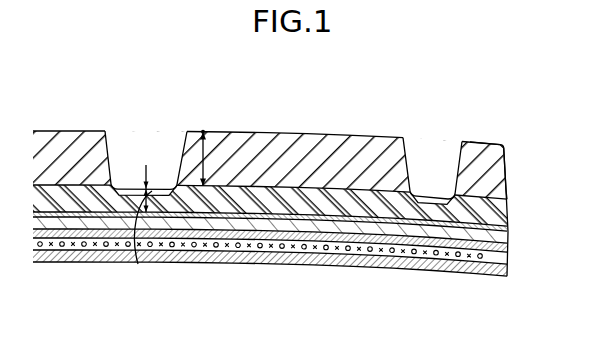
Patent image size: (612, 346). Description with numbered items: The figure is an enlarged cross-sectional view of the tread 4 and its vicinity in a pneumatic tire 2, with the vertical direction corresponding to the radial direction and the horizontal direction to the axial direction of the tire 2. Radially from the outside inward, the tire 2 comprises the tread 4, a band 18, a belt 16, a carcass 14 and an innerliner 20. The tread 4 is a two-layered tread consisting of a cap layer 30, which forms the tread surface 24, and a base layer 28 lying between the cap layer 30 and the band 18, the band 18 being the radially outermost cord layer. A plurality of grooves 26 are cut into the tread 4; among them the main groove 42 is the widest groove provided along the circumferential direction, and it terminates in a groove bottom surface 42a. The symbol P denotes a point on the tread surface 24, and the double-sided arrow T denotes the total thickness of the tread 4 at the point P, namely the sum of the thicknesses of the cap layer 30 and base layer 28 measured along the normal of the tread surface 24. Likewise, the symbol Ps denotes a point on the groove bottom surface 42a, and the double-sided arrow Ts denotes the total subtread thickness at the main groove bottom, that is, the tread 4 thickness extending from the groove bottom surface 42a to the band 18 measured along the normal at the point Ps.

The pneumatic tire 2 is at (499, 104).
The tread 4 is at (275, 127).
The carcass 14 is at (68, 263).
The belt 16 is at (243, 240).
The band 18 is at (318, 216).
The innerliner 20 is at (418, 274).
The tread surface 24 is at (357, 132).
The groove 26 is at (110, 129).
The base layer 28 is at (508, 217).
The cap layer 30 is at (497, 174).
The main groove 42 is at (270, 150).
The groove bottom surface 42a is at (163, 186).
The point on tread surface P is at (205, 128).
The total thickness of tread T is at (211, 159).
The total subtread thickness at main groove bottom Ts is at (157, 193).
The point on groove bottom surface Ps is at (138, 264).